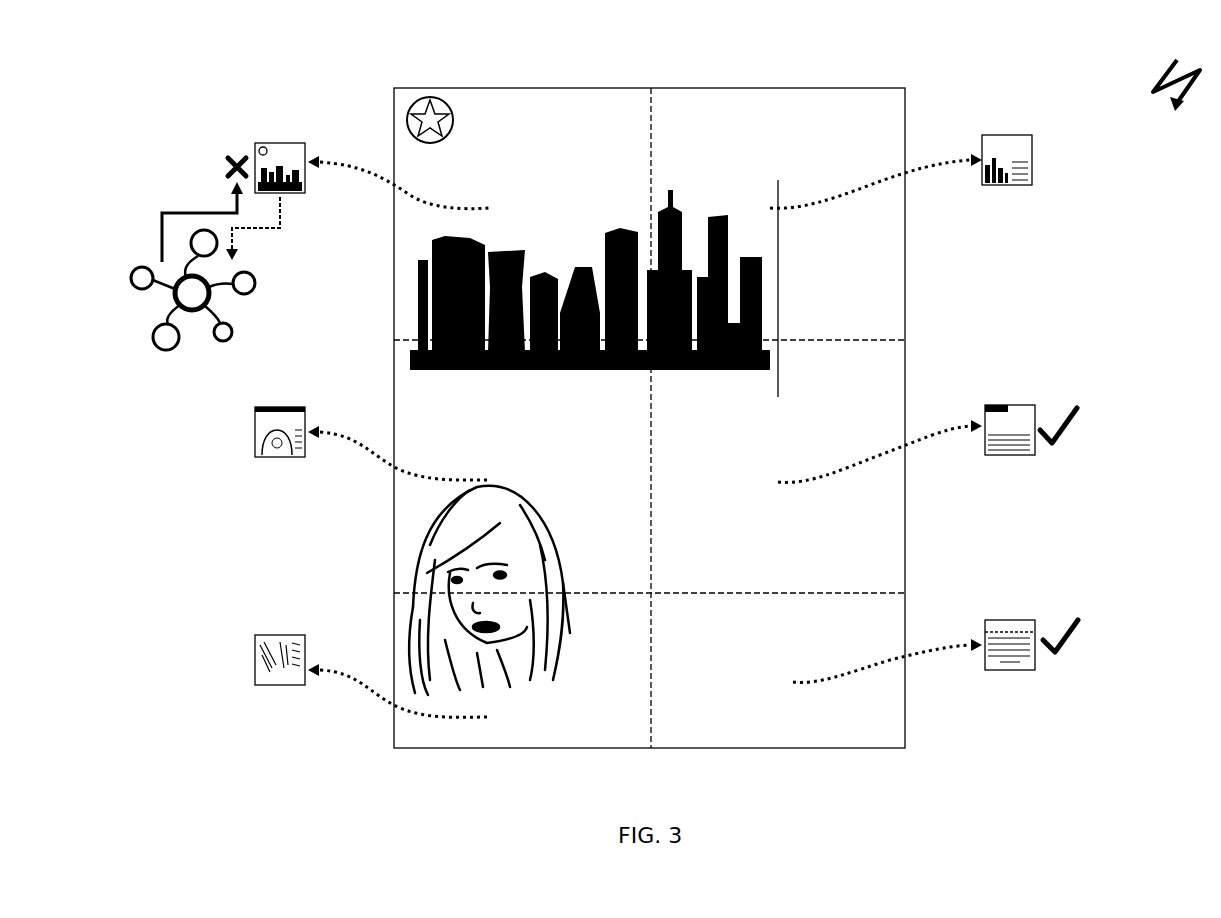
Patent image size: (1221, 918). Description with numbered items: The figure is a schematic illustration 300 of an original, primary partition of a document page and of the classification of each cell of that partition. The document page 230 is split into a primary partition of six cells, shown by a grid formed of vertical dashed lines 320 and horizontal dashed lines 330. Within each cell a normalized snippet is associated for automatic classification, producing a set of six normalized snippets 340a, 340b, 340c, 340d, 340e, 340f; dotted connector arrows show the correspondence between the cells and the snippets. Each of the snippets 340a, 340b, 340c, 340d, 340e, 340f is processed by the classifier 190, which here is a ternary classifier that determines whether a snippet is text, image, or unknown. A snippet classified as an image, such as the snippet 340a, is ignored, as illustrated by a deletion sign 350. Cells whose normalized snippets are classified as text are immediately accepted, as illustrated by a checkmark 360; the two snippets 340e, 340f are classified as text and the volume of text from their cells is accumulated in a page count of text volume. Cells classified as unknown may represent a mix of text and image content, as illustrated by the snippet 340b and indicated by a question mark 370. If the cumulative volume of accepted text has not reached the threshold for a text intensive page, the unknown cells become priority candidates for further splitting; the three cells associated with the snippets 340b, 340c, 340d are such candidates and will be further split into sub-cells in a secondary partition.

The schematic illustration 300 is at (1176, 72).
The document page 230 is at (619, 396).
The vertical dashed lines 320 is at (645, 112).
The horizontal dashed lines 330 is at (877, 588).
The classifier 190 is at (199, 332).
The deletion sign 350 is at (223, 170).
The checkmark 360 is at (1077, 425).
The question mark 370 is at (225, 662).
The normalized snippet 340a is at (260, 140).
The normalized snippet 340b is at (252, 457).
The normalized snippet 340c is at (247, 635).
The normalized snippet 340d is at (1007, 132).
The normalized snippet 340e is at (1010, 400).
The normalized snippet 340f is at (1003, 613).